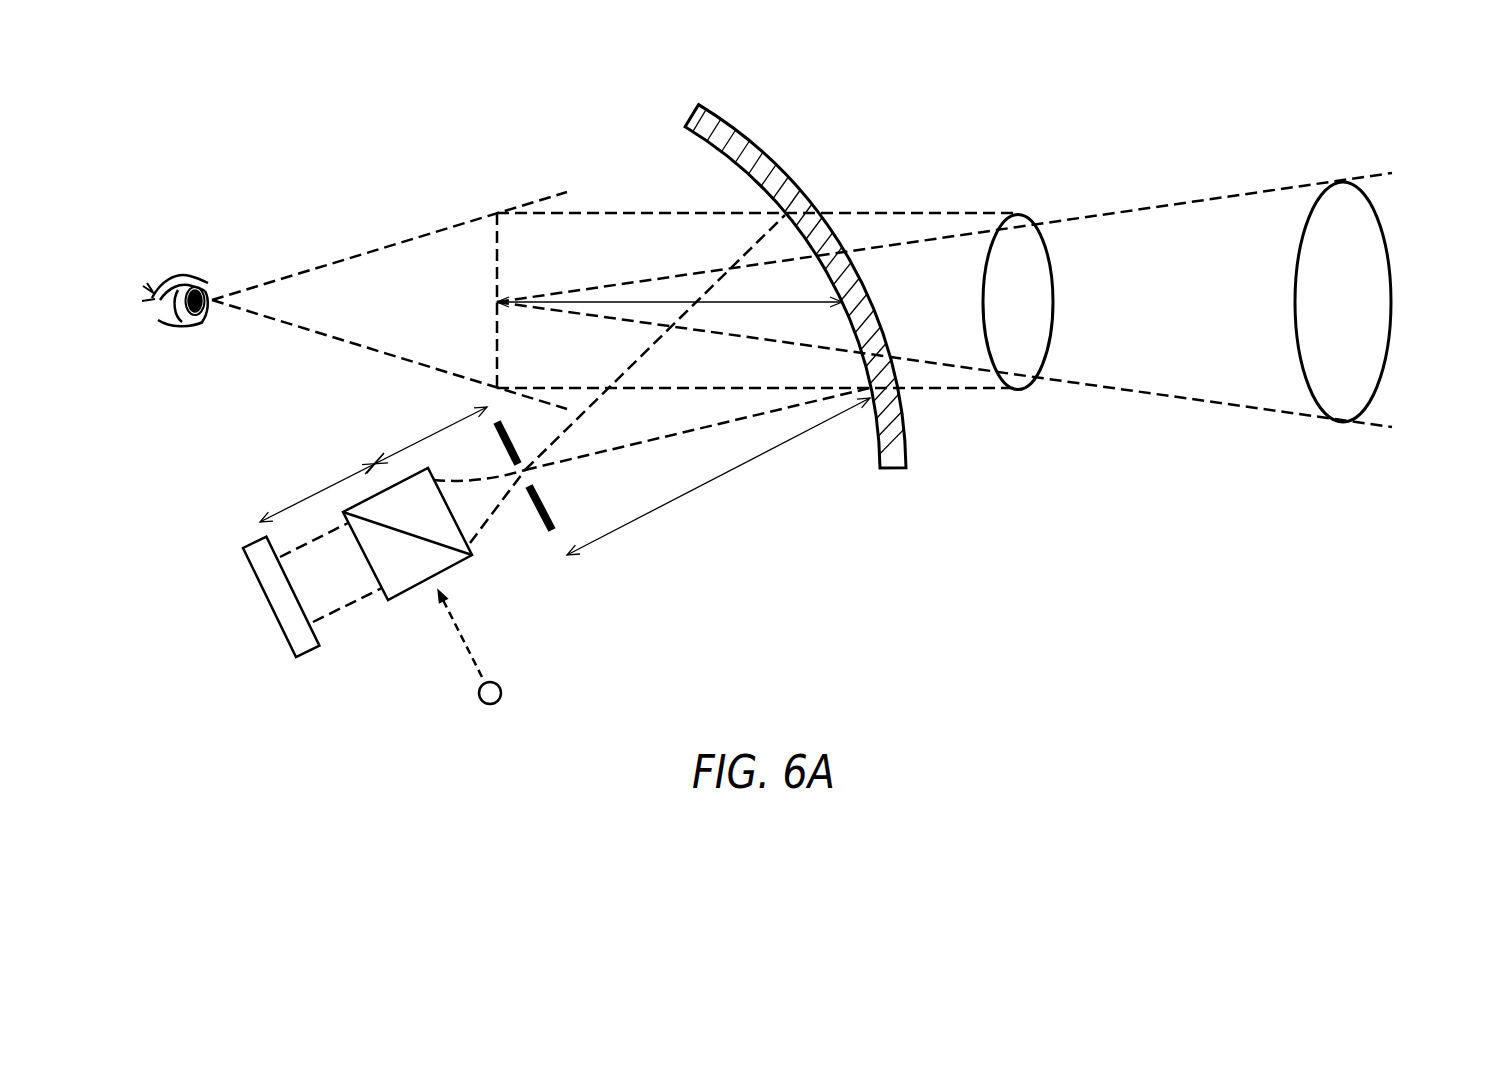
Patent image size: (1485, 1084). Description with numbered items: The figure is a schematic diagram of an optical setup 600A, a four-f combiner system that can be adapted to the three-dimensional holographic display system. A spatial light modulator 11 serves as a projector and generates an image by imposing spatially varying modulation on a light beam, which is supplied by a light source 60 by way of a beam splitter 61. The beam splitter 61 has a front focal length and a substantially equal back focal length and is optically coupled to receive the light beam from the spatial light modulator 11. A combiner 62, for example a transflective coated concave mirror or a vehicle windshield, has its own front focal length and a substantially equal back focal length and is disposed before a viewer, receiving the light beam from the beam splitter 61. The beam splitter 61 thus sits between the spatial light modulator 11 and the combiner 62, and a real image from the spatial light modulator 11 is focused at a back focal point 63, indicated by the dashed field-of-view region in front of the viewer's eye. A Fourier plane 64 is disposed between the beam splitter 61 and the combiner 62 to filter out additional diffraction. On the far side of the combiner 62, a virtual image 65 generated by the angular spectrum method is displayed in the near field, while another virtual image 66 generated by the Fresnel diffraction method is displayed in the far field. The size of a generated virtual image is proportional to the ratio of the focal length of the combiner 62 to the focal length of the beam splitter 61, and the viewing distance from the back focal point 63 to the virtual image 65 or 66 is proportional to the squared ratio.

The optical setup 600A is at (177, 108).
The spatial light modulator 11 is at (308, 657).
The light source 60 is at (503, 692).
The beam splitter 61 is at (403, 597).
The combiner 62 is at (893, 465).
The back focal point 63 is at (490, 255).
The Fourier plane 64 is at (542, 523).
The virtual image 65 is at (1042, 300).
The virtual image 66 is at (1377, 300).